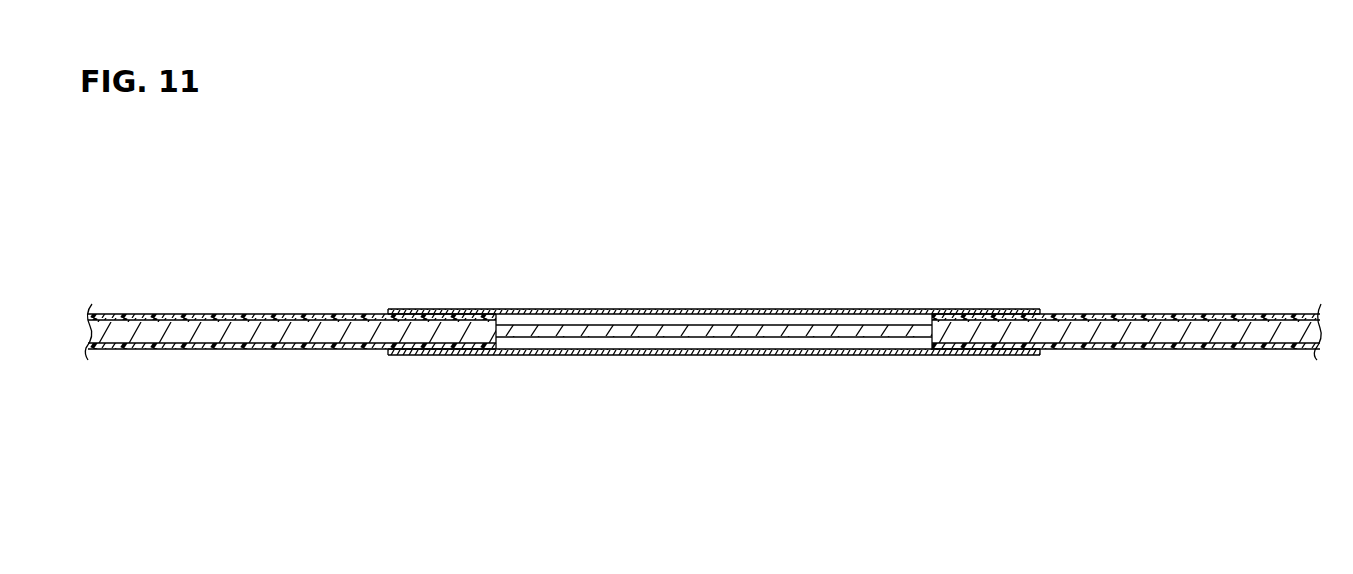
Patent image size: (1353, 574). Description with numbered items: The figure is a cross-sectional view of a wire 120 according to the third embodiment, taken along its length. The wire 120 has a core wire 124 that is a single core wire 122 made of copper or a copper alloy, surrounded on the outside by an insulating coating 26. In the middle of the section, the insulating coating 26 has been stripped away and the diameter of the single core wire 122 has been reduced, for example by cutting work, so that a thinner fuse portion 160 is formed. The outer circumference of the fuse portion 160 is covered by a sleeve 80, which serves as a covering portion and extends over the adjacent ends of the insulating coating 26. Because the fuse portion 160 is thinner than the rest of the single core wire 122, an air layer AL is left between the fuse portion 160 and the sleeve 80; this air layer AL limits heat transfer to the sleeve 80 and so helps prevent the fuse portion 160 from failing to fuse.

The insulating coating 26 is at (703, 332).
The wire 120 is at (714, 308).
The single core wire 122 is at (1112, 332).
The core wire 124 is at (272, 334).
The fuse portion 160 is at (576, 333).
The sleeve 80 is at (625, 355).
The air layer AL is at (771, 343).